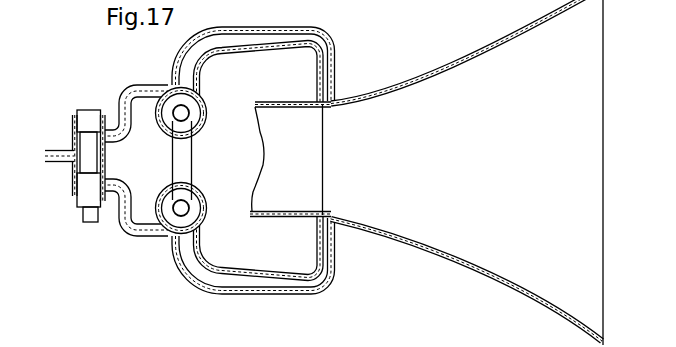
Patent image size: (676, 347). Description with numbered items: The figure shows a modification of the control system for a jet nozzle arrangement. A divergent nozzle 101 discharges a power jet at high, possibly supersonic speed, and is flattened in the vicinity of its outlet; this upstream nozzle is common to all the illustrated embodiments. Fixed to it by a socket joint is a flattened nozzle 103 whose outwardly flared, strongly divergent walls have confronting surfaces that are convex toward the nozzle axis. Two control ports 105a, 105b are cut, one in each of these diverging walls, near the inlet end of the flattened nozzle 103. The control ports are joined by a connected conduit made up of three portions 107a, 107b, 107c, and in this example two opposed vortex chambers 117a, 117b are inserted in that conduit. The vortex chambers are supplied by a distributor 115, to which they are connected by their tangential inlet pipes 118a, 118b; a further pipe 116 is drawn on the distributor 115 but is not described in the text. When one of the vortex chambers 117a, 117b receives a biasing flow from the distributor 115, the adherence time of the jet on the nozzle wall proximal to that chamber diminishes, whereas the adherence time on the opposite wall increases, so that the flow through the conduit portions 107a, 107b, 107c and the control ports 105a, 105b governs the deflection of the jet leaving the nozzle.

The divergent nozzle 101 is at (282, 114).
The flattened nozzle 103 is at (449, 80).
The control port 105a is at (332, 107).
The control port 105b is at (331, 216).
The conduit portion 107a is at (279, 27).
The conduit portion 107b is at (268, 295).
The conduit portion 107c is at (191, 158).
The distributor 115 is at (78, 190).
The inlet pipe 116 is at (57, 149).
The vortex chamber 117a is at (197, 107).
The vortex chamber 117b is at (197, 208).
The tangential inlet pipe 118a is at (143, 92).
The tangential inlet pipe 118b is at (147, 233).